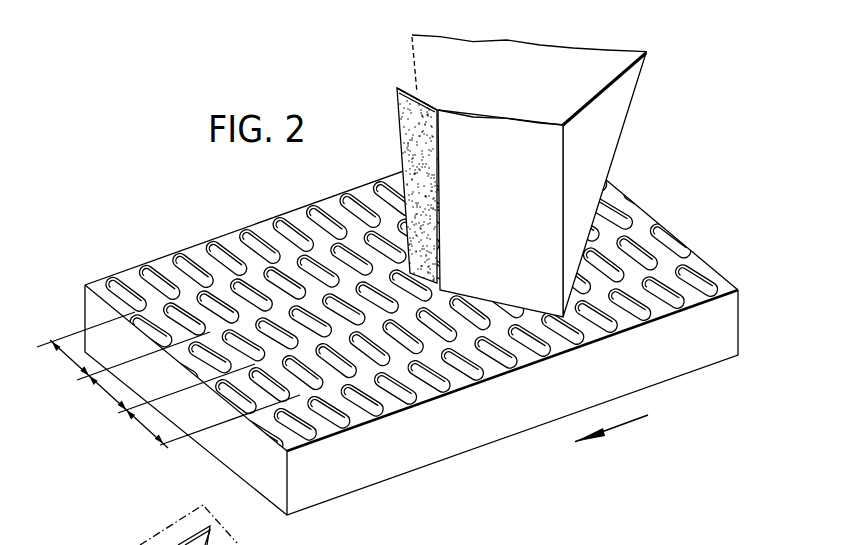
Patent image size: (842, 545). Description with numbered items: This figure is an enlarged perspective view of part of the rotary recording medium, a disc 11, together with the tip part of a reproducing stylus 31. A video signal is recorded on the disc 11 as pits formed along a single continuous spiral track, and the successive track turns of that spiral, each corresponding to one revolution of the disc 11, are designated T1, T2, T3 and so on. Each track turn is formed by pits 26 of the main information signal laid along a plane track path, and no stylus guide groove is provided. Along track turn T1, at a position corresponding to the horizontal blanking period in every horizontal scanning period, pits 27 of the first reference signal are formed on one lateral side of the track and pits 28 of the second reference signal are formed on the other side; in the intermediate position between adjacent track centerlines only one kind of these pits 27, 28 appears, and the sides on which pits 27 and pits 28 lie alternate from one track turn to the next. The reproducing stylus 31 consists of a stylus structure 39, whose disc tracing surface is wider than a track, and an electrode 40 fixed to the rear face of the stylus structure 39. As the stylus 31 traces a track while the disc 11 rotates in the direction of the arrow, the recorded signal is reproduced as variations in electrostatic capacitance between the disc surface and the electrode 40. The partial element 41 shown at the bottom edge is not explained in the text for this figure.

The disc 11 is at (163, 250).
The pits of the main information signal 26 is at (251, 237).
The pits of the first reference signal fp1 27 is at (314, 252).
The pits of the second reference signal fp2 28 is at (597, 290).
The reproducing stylus 31 is at (394, 83).
The stylus structure 39 is at (628, 130).
The electrode 40 is at (405, 126).
The tool 41 is at (138, 544).
The track turn T1 is at (123, 380).
The track turn T2 is at (167, 390).
The track turn T3 is at (208, 422).